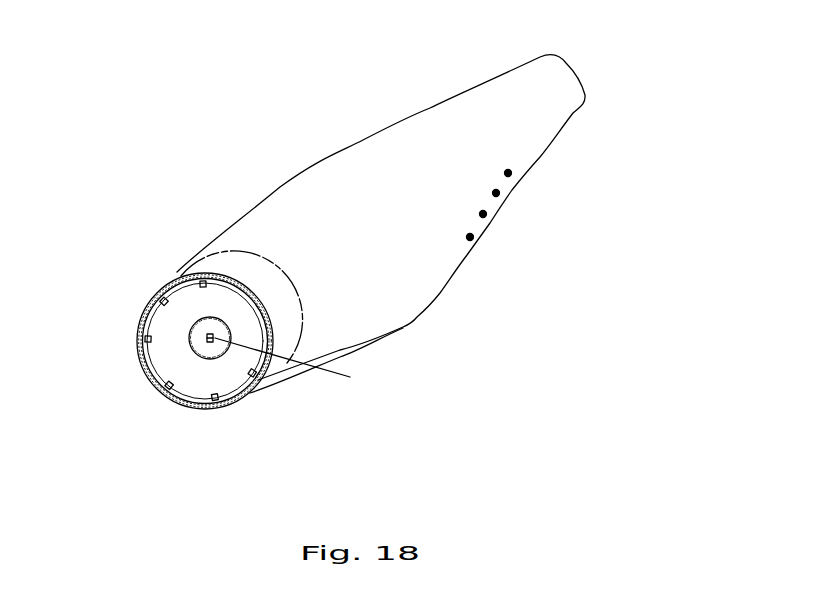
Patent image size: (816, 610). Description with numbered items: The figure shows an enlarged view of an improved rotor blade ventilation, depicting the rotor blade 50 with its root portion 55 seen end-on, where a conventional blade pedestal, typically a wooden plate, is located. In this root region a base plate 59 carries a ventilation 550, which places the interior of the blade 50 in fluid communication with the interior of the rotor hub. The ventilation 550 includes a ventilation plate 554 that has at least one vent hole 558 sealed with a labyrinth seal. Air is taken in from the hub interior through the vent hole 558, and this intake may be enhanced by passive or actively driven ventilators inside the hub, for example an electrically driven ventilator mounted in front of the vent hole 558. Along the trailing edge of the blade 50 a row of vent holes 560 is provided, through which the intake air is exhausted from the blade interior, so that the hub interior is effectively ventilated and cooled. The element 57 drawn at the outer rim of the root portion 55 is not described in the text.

The rotor blade 50 is at (363, 140).
The root portion 55 is at (152, 236).
The outer ring 57 is at (250, 390).
The base plate 59 is at (193, 370).
The ventilation 550 is at (166, 328).
The ventilation plate 554 is at (306, 365).
The vent hole 558 is at (208, 339).
The vent holes 560 is at (524, 213).